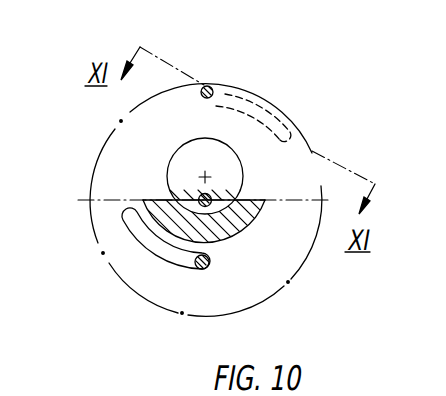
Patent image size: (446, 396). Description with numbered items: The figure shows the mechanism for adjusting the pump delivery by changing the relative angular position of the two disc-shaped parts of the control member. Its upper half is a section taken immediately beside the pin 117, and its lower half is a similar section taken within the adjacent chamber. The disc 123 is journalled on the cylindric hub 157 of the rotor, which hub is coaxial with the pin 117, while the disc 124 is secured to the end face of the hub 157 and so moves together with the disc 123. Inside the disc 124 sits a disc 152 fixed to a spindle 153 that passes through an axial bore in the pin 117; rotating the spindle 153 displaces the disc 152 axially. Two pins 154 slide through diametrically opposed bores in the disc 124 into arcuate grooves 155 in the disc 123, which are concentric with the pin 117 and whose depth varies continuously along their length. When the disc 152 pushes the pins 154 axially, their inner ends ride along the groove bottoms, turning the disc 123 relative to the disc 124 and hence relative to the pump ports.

The pin 117 is at (228, 173).
The disc 123 is at (132, 318).
The disc 124 is at (123, 150).
The disc 152 is at (288, 104).
The spindle 153 is at (199, 197).
The pins 154 is at (226, 62).
The arcuate grooves 155 is at (175, 263).
The cylindric hub 157 is at (242, 221).